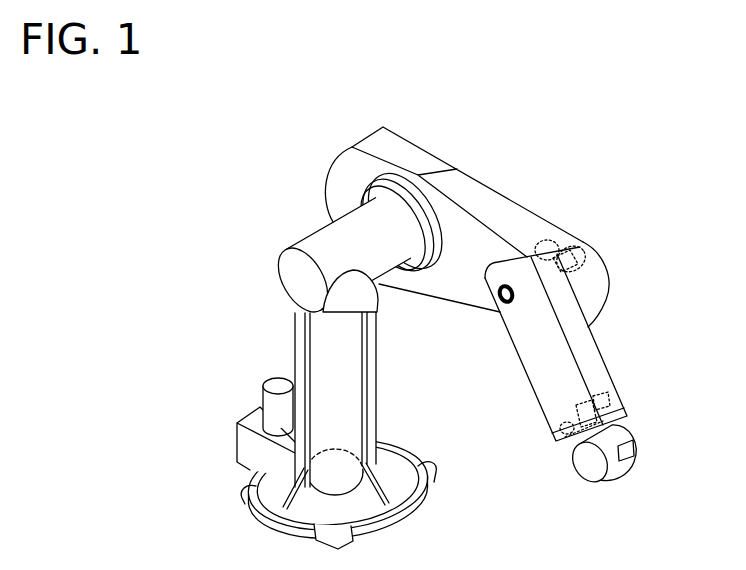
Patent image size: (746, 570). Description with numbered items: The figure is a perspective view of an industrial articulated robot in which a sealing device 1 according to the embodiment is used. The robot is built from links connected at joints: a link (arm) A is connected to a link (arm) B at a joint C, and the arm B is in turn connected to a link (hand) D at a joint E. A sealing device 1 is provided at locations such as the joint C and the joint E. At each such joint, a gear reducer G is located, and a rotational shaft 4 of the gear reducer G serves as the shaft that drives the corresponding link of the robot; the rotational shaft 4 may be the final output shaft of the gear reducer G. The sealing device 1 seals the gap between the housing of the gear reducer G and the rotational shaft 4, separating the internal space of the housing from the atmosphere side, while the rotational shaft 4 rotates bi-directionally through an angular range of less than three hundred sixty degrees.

The link (arm) A is at (517, 213).
The link (arm) B is at (597, 368).
The joint C is at (601, 288).
The link (hand) D is at (578, 470).
The joint E is at (617, 415).
The gear reducer G is at (588, 242).
The sealing device 1 is at (497, 305).
The rotational shaft 4 is at (515, 300).